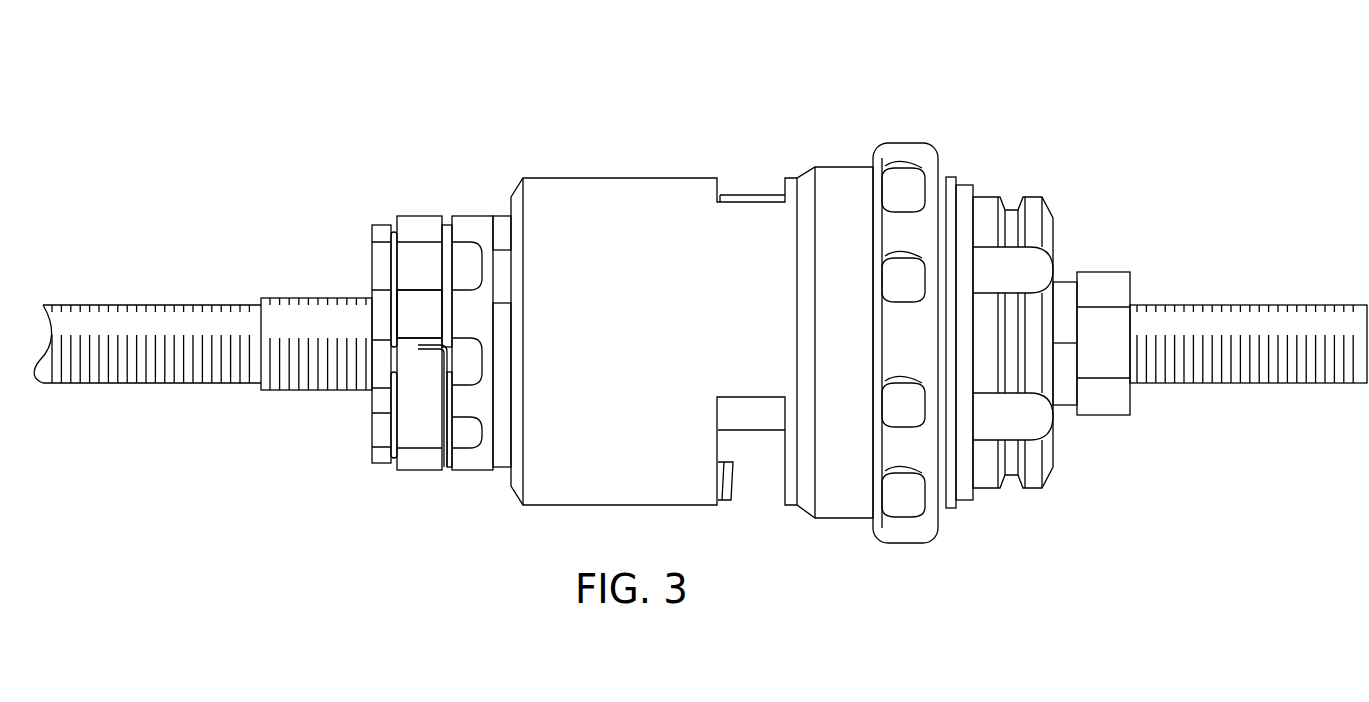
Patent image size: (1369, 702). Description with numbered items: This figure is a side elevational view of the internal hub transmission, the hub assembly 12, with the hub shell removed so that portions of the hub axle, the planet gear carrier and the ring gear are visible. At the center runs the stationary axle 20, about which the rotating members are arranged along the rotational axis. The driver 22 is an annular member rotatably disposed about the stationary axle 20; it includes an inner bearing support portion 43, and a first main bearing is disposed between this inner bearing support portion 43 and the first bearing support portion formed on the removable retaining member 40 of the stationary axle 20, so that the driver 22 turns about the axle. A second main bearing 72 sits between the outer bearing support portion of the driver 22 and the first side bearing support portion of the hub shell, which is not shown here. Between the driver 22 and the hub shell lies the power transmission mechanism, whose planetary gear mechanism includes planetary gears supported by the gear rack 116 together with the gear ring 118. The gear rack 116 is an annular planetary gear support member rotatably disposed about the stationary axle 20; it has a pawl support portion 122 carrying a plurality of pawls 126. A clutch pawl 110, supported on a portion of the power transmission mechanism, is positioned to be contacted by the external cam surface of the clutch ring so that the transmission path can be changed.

The hub assembly 12 is at (1018, 70).
The stationary axle 20 is at (1264, 323).
The driver 22 is at (985, 215).
The removable retaining member 40 is at (1103, 288).
The inner bearing support portion 43 is at (1045, 230).
The second main bearing 72 is at (897, 192).
The clutch pawl 110 is at (748, 195).
The gear rack 116 is at (468, 230).
The gear ring 118 is at (610, 222).
The pawl support portion 122 is at (417, 308).
The pawls 126 is at (417, 365).